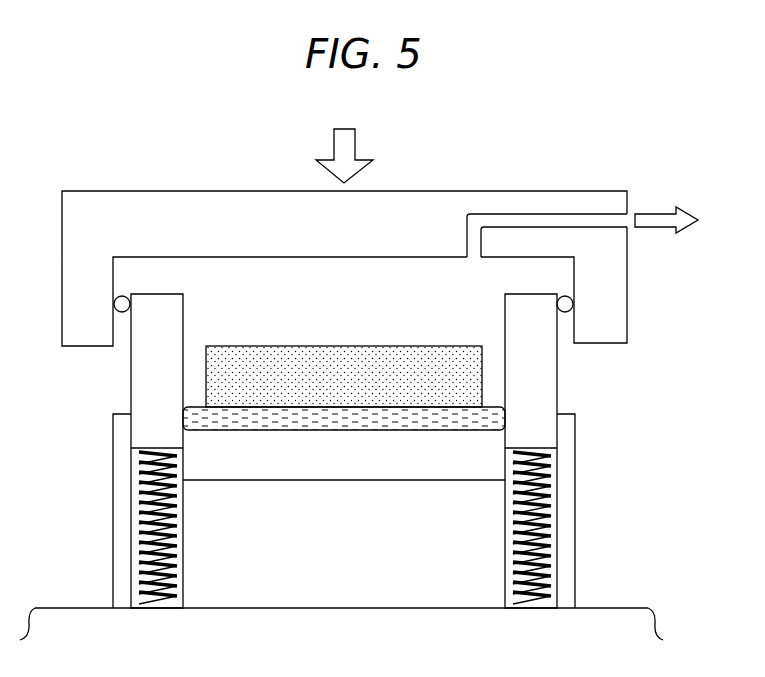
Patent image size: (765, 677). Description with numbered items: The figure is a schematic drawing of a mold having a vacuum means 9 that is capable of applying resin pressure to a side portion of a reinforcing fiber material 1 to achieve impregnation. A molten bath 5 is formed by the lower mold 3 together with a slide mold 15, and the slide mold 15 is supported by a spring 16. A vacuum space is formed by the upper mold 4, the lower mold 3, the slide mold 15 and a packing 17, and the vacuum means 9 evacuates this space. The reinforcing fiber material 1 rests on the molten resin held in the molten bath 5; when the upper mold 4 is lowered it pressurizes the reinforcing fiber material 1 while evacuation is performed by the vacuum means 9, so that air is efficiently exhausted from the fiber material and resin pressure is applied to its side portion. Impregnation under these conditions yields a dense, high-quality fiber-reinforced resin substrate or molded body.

The reinforcing fiber material 1 is at (340, 346).
The lower mold 3 is at (625, 602).
The upper mold 4 is at (627, 283).
The molten bath 5 is at (504, 399).
The vacuum means 9 is at (676, 220).
The slide mold 15 is at (557, 365).
The spring 16 is at (550, 469).
The packing 17 is at (567, 312).